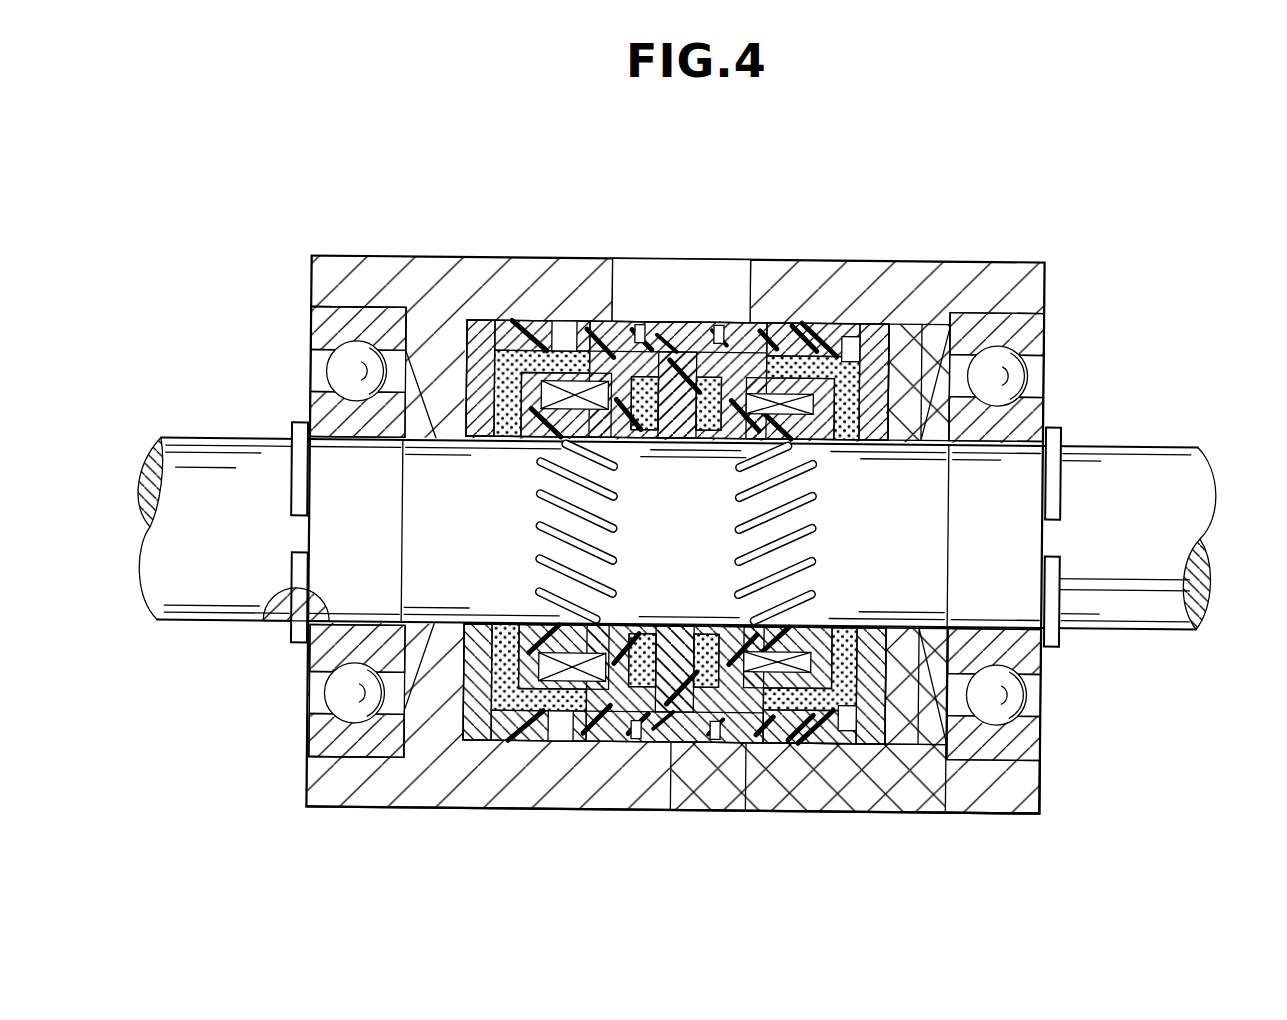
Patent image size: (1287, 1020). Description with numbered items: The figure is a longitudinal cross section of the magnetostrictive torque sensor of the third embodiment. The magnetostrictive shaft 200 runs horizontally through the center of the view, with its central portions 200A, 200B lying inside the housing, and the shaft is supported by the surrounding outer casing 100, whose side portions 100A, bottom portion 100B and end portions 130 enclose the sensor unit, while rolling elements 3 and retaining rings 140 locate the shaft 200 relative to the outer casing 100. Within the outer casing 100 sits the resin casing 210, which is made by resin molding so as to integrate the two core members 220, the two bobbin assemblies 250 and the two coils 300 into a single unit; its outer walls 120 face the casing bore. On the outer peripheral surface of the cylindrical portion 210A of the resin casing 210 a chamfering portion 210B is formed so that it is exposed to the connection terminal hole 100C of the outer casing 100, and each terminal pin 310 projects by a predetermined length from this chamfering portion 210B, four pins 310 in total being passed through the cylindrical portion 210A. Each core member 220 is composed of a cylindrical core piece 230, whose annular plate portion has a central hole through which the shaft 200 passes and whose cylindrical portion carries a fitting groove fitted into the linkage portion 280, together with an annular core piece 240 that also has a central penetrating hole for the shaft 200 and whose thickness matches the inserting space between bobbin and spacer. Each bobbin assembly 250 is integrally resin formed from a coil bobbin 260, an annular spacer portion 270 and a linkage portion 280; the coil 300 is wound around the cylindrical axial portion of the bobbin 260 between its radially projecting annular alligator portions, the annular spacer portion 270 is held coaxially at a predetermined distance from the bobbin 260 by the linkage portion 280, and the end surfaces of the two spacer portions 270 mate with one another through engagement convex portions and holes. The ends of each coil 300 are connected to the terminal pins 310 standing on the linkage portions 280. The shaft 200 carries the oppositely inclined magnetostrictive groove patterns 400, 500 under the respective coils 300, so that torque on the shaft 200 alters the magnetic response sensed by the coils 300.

The ball bearing 3 is at (1028, 373).
The outer casing 100 is at (1025, 273).
The bearing support portion of housing 100A is at (1045, 332).
The bottom portion of housing 100B is at (433, 707).
The connection terminal hole 100C is at (735, 300).
The seal case wall 120 is at (475, 735).
The housing wall 130 is at (945, 811).
The snap ring 140 is at (294, 428).
The magnetostrictive shaft 200 is at (1192, 445).
The first shaft portion 200A is at (553, 550).
The second shaft portion 200B is at (797, 553).
The resin casing 210 is at (508, 310).
The cylindrical portion 210A is at (710, 733).
The chamfering portion 210B is at (690, 338).
The core member 220 is at (500, 365).
The cylindrical core piece 230 is at (537, 697).
The annular core piece 240 is at (630, 762).
The bobbin assembly 250 is at (595, 345).
The coil bobbin 260 is at (567, 650).
The annular spacer portion 270 is at (727, 745).
The linkage portion 280 is at (663, 335).
The coil 300 is at (560, 325).
The terminal pin 310 is at (640, 340).
The helical grooves 400 is at (540, 492).
The helical grooves 500 is at (812, 530).